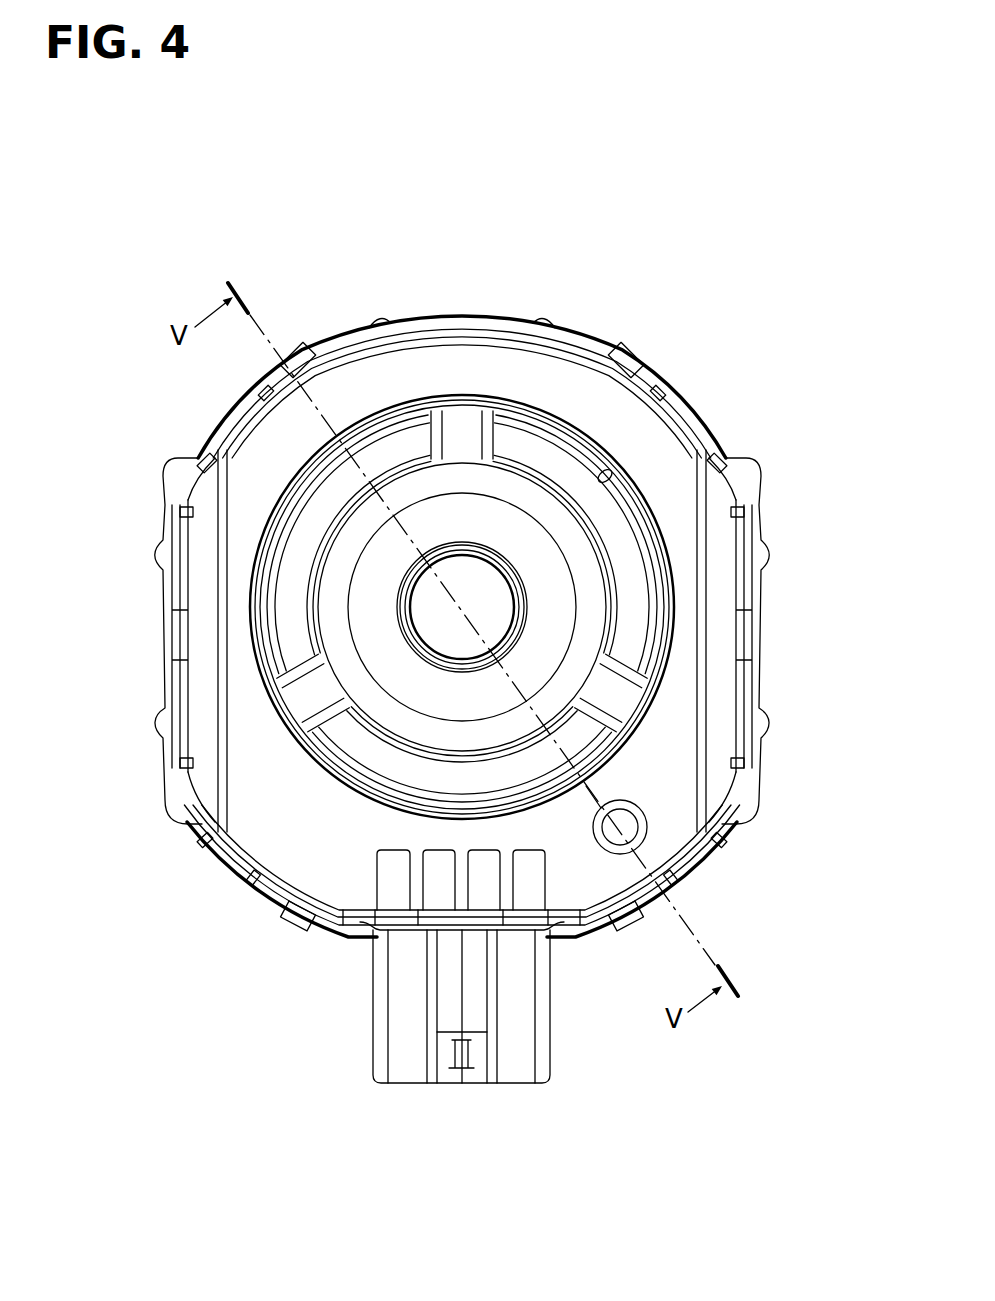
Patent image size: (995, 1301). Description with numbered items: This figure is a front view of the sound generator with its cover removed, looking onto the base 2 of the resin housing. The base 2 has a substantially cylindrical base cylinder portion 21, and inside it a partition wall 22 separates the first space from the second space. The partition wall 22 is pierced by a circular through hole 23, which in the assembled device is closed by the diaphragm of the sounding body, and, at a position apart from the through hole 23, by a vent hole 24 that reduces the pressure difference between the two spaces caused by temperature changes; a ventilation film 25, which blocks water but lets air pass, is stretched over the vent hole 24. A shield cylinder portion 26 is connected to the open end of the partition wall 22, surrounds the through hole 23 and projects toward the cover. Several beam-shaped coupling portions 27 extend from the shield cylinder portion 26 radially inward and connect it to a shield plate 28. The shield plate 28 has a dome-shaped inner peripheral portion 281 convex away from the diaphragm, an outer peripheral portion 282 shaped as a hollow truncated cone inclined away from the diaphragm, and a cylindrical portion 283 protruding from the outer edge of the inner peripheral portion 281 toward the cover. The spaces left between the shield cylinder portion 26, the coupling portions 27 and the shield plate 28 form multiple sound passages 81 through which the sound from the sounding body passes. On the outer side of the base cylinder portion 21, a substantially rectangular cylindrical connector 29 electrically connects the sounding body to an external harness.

The base 2 is at (600, 338).
The base cylinder portion 21 is at (562, 345).
The partition wall 22 is at (613, 417).
The through hole 23 is at (633, 465).
The vent hole 24 is at (650, 832).
The ventilation film 25 is at (613, 845).
The shield cylinder portion 26 is at (614, 474).
The coupling portion 27 is at (613, 693).
The shield plate 28 is at (616, 542).
The inner peripheral portion 281 is at (483, 609).
The outer peripheral portion 282 is at (547, 630).
The cylindrical portion 283 is at (517, 637).
The connector 29 is at (522, 1037).
The sound passage 81 is at (380, 753).